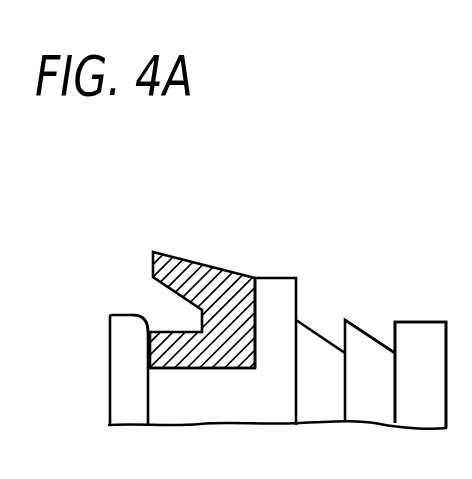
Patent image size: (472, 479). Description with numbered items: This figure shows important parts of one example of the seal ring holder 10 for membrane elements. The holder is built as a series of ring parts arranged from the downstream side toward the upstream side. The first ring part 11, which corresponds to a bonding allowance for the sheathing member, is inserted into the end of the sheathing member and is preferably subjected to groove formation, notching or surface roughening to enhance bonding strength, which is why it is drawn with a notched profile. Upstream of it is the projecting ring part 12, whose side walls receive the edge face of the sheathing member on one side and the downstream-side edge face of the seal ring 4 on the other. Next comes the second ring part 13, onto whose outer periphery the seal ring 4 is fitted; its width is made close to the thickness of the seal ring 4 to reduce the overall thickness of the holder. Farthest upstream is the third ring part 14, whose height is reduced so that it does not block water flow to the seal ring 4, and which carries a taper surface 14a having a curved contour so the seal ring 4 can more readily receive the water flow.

The seal ring 4 is at (203, 262).
The mating member 10 is at (350, 247).
The first ring part 11 is at (379, 308).
The projecting ring part 12 is at (273, 275).
The second ring part 13 is at (162, 368).
The third ring part 14 is at (114, 293).
The taper surface 14a is at (142, 318).